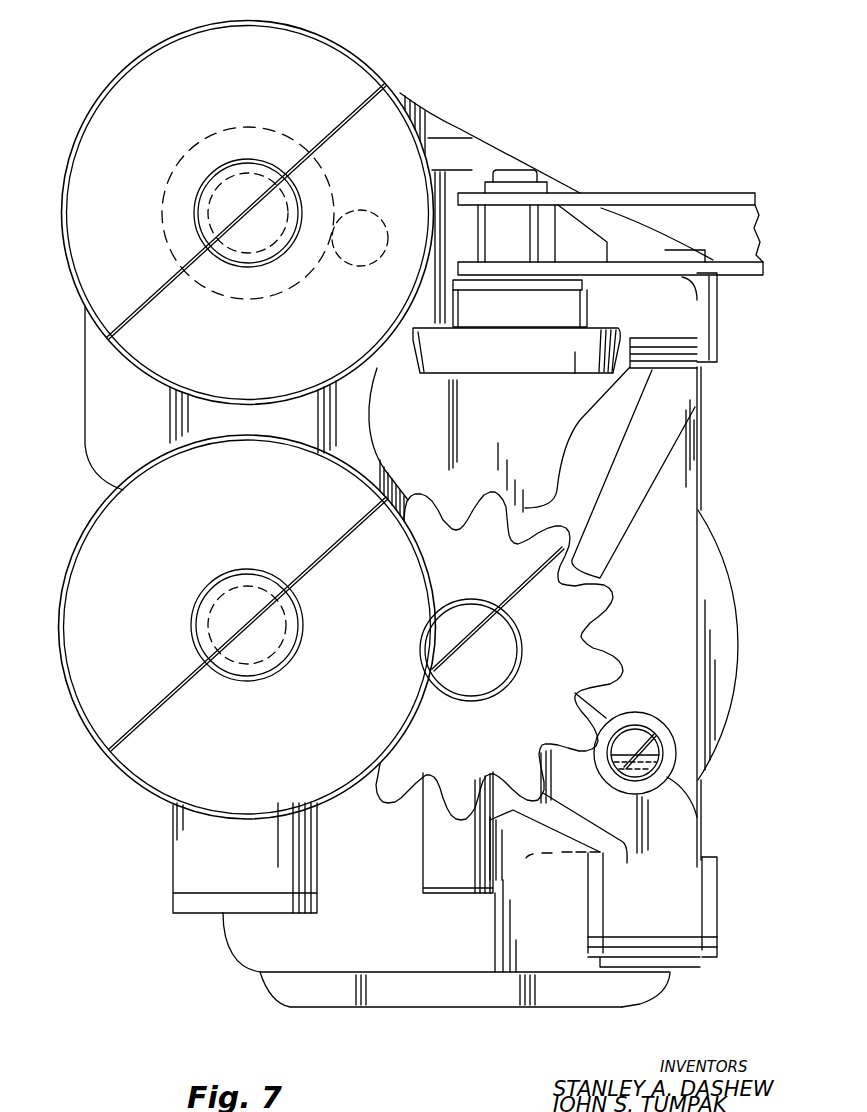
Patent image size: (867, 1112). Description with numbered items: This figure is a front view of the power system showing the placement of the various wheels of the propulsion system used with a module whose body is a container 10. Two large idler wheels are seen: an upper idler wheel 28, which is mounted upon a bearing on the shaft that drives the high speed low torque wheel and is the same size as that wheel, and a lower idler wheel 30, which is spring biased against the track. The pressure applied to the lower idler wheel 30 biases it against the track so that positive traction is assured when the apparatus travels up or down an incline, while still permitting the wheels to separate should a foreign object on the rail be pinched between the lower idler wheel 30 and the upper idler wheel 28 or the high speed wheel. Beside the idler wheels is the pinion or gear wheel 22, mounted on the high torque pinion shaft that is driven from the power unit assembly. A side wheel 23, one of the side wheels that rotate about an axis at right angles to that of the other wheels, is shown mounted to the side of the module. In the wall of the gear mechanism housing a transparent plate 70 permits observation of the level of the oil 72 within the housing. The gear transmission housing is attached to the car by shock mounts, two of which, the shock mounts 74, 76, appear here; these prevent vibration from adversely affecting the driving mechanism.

The container 10 is at (715, 542).
The pinion or gear wheel 22 is at (617, 590).
The side wheel 23 is at (558, 377).
The upper idler wheel 28 is at (317, 32).
The lower idler wheel 30 is at (120, 768).
The transparent plate 70 is at (627, 737).
The oil 72 is at (655, 747).
The shock mount 74 is at (717, 334).
The shock mount 76 is at (717, 905).